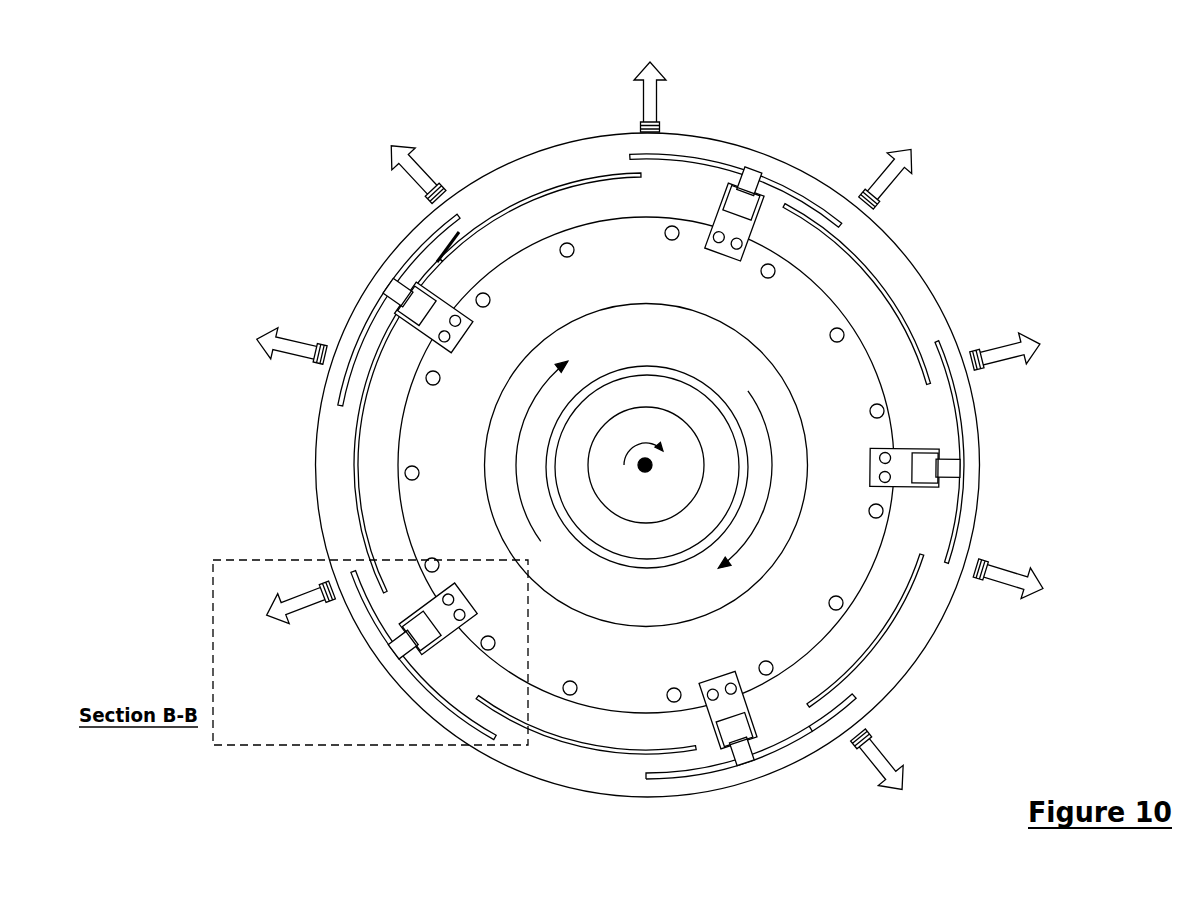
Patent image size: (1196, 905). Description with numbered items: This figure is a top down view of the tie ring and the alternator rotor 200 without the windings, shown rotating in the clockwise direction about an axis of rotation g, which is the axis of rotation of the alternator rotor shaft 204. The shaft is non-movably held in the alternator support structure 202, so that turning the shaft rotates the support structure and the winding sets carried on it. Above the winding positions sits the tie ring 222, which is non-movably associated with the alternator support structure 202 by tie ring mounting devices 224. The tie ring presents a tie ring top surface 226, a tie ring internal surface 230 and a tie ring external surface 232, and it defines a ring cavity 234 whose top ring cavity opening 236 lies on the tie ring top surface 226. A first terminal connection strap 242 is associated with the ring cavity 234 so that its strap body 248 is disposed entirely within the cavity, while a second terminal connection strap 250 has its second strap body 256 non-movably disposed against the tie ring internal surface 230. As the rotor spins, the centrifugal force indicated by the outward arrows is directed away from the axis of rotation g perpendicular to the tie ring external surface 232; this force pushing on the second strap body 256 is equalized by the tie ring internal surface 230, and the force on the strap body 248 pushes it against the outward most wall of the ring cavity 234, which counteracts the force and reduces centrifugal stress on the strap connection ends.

The alternator rotor 200 is at (644, 442).
The alternator support structure 202 is at (650, 291).
The alternator rotor shaft 204 is at (667, 508).
The tie ring 222 is at (343, 522).
The tie ring mounting device 224 is at (917, 447).
The tie ring top surface 226 is at (387, 278).
The tie ring internal surface 230 is at (380, 357).
The tie ring external surface 232 is at (315, 432).
The ring cavity 234 is at (660, 773).
The top ring cavity opening 236 is at (860, 698).
The first terminal connection strap 242 is at (440, 692).
The strap body 248 is at (777, 753).
The second terminal connection strap 250 is at (527, 200).
The second strap body 256 is at (560, 737).